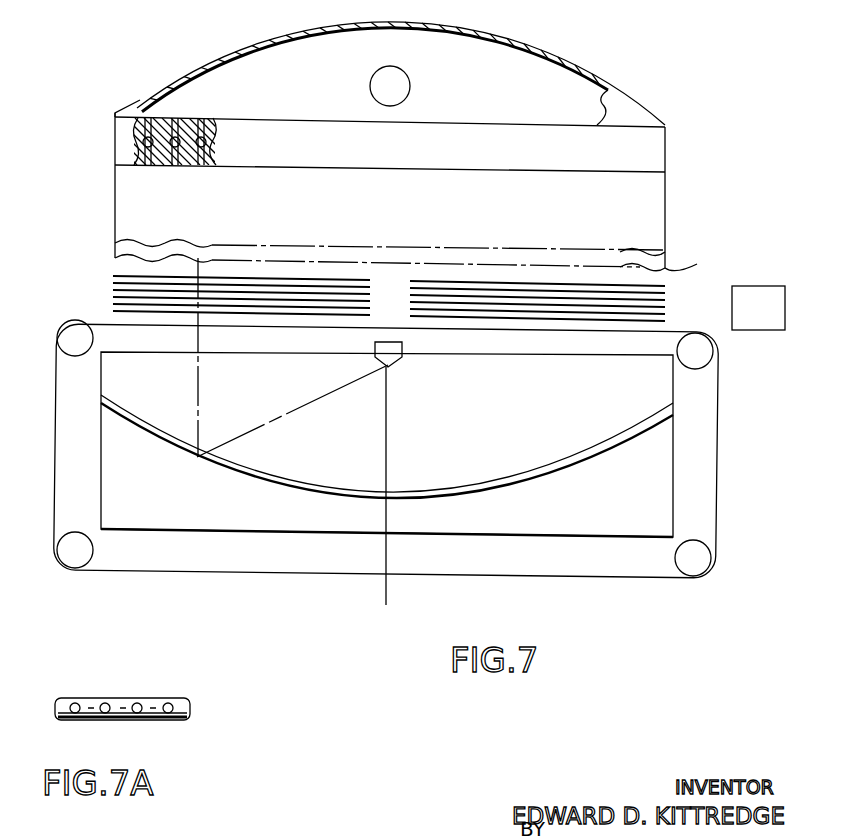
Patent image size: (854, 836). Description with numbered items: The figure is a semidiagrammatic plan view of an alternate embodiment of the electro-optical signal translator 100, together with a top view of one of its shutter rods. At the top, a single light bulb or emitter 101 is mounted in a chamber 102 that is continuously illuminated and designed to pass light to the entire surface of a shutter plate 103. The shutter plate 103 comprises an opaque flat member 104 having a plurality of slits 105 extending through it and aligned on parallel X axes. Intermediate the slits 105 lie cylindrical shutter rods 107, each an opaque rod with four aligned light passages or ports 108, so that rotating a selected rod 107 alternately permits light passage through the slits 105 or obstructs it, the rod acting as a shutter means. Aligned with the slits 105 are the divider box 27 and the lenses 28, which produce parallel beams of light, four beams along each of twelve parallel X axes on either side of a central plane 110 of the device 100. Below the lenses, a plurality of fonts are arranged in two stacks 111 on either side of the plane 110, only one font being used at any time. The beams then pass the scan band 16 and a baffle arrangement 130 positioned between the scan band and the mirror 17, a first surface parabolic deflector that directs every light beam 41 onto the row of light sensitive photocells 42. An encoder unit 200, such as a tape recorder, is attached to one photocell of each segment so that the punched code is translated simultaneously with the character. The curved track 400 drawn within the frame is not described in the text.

In FIG. 7, the scan band 16 is at (612, 578).
In FIG. 7, the mirror 17 is at (616, 511).
In FIG. 7, the divider box 27 is at (650, 210).
In FIG. 7, the lenses 28 is at (690, 257).
In FIG. 7, the light beam 41 is at (268, 420).
In FIG. 7, the row of photocells 42 is at (397, 368).
In FIG. 7, the electro-optical signal translator 100 is at (420, 469).
In FIG. 7, the light bulb or emitter 101 is at (408, 78).
In FIG. 7, the chamber 102 is at (268, 60).
In FIG. 7, the shutter plate 103 is at (665, 128).
In FIG. 7, the opaque flat member 104 is at (665, 152).
In FIG. 7, the slits 105 is at (132, 126).
In FIG. 7, the cylindrical shutter rod 107 is at (140, 160).
In FIG. 7A, the cylindrical shutter rod 107 is at (158, 697).
In FIG. 7A, the light passages or ports 108 is at (100, 704).
In FIG. 7, the central plane 110 is at (394, 499).
In FIG. 7, the font stacks 111 is at (100, 298).
In FIG. 7, the baffle arrangement 130 is at (437, 456).
In FIG. 7, the encoder unit 200 is at (747, 286).
In FIG. 7, the curved track 400 is at (526, 486).